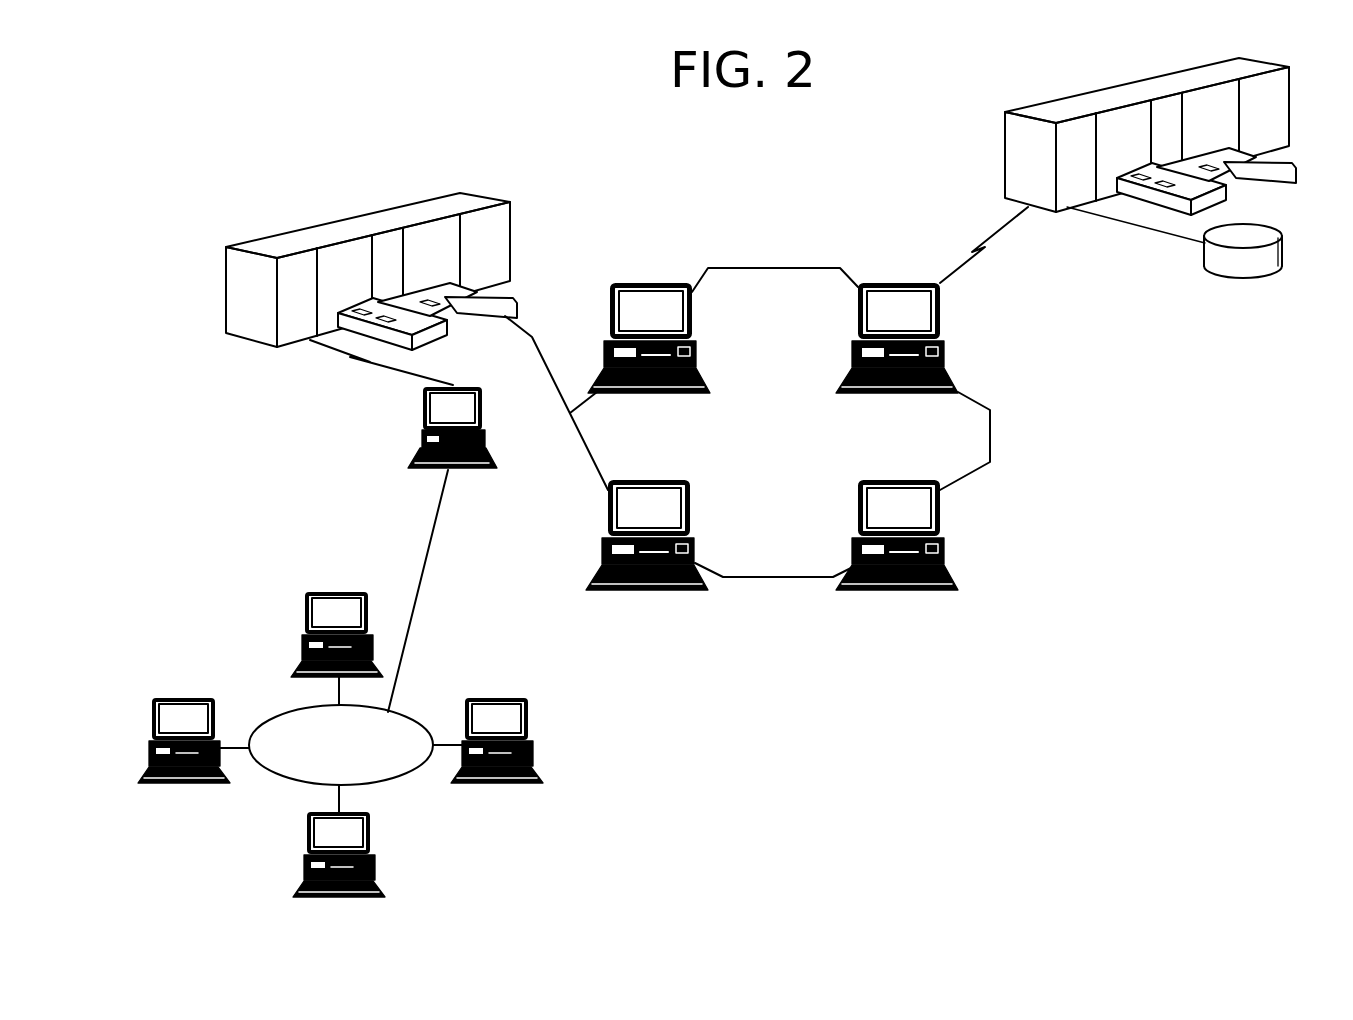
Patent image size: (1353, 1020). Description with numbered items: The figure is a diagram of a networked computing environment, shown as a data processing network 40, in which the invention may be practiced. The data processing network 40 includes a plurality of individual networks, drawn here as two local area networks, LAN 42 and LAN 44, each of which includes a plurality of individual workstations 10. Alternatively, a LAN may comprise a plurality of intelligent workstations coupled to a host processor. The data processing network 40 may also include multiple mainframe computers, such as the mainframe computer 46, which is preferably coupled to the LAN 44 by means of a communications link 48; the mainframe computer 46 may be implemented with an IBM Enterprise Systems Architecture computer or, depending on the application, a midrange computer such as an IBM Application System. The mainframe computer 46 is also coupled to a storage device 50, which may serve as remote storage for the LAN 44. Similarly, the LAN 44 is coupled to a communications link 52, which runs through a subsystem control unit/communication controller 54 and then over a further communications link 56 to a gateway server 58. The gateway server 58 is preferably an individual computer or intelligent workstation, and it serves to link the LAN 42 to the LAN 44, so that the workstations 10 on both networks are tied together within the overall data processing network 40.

The workstation 10 is at (645, 282).
The data processing network 40 is at (780, 249).
The LAN 42 is at (339, 654).
The LAN 44 is at (841, 422).
The mainframe computer 46 is at (1070, 95).
The communications link 48 is at (995, 226).
The storage device 50 is at (1290, 242).
The communications link 52 is at (548, 352).
The subsystem control unit/communication controller 54 is at (378, 205).
The communications link 56 is at (347, 352).
The gateway server 58 is at (488, 397).